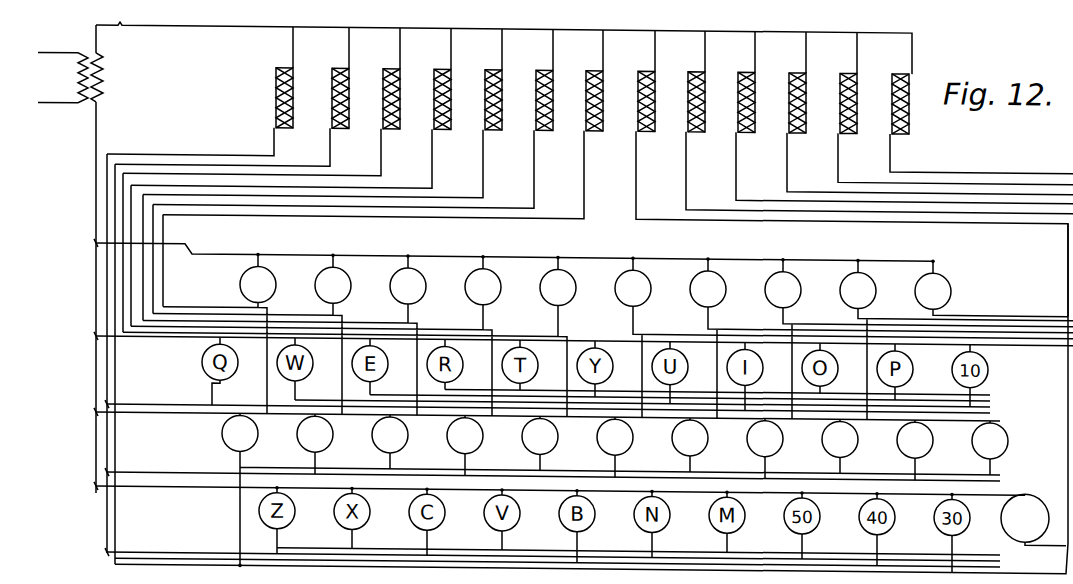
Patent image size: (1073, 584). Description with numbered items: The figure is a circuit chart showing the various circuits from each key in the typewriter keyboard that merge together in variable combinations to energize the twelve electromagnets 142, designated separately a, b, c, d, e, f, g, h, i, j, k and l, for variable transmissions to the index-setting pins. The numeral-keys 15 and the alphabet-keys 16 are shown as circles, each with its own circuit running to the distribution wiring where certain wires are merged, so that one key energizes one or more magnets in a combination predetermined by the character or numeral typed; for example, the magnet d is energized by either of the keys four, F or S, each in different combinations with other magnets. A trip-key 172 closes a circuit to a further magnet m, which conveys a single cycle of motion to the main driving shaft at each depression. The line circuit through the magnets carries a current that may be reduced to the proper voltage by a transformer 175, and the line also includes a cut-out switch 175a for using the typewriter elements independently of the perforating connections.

The transformer 175 is at (76, 83).
The cut-out switch 175a is at (125, 26).
The electromagnets 142 is at (268, 98).
The numeral-keys 15 is at (947, 283).
The alphabet-keys 16 is at (222, 432).
The trip-key 172 is at (1031, 479).